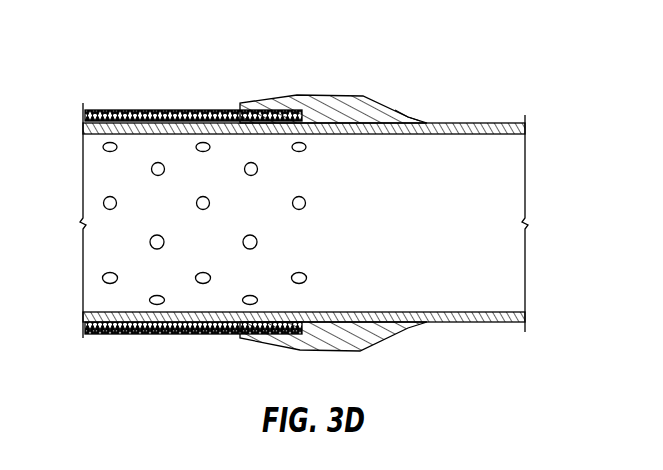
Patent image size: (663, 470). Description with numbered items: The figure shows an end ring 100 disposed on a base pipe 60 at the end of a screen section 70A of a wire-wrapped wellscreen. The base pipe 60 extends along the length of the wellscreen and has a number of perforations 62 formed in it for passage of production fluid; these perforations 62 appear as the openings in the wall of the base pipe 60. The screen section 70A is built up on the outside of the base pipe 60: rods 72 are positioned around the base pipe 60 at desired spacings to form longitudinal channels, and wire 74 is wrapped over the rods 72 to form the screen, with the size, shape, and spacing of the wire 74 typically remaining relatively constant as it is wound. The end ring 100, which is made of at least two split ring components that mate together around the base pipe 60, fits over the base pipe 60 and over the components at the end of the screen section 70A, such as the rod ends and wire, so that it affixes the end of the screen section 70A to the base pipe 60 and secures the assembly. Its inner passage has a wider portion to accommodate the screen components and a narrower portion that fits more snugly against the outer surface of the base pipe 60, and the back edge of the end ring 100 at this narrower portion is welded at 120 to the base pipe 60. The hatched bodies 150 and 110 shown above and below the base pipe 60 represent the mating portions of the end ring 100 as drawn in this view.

The end ring 100 is at (423, 49).
The base pipe 60 is at (478, 123).
The perforations 62 is at (152, 233).
The screen section 70A is at (113, 88).
The rods 72 is at (83, 121).
The wire 74 is at (195, 110).
The bottom pad 110 is at (360, 351).
The weld 120 is at (413, 120).
The top pad 150 is at (333, 95).